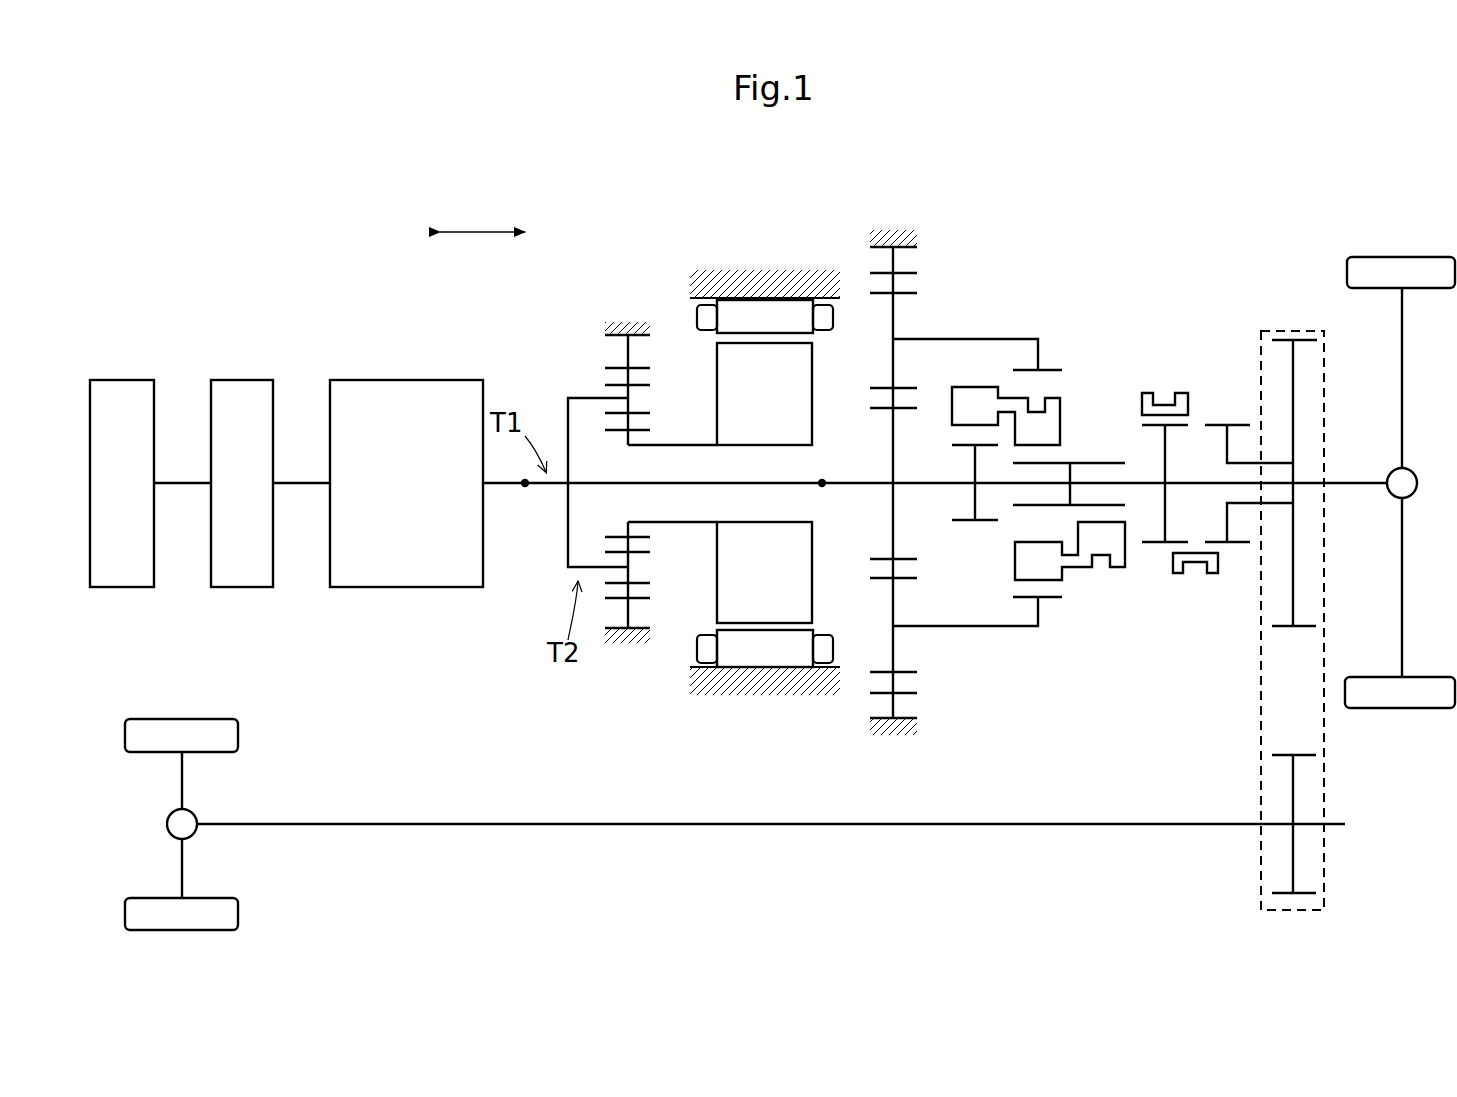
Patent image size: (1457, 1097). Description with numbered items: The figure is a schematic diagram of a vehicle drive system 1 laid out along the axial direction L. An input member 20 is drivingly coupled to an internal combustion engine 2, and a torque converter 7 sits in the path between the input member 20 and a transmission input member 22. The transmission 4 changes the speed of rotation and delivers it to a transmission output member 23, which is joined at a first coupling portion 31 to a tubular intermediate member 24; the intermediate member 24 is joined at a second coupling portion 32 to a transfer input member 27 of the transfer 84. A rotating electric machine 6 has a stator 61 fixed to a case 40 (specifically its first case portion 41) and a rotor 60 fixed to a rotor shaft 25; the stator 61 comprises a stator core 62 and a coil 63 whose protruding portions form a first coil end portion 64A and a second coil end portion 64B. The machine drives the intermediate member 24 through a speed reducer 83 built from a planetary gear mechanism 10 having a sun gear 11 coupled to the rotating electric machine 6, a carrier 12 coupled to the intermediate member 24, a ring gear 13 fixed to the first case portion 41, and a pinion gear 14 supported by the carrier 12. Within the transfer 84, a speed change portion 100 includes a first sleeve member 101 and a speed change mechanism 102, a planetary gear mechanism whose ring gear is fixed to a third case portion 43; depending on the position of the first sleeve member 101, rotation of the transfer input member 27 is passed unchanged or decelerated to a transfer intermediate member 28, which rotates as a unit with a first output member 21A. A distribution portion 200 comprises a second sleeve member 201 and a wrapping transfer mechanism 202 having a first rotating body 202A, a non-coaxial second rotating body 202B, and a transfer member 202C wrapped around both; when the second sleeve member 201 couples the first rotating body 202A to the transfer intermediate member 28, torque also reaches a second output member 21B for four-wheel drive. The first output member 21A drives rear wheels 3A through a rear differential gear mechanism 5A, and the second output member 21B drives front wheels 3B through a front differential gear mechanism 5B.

The vehicle drive system 1 is at (656, 187).
The internal combustion engine 2 is at (118, 378).
The torque converter 7 is at (246, 380).
The transmission 4 is at (405, 380).
The input member 20 is at (180, 488).
The transmission input member 22 is at (300, 488).
The transmission output member 23 is at (500, 488).
The intermediate member 24 is at (672, 485).
The transfer intermediate member 28 is at (1148, 482).
The first coupling portion 31 is at (526, 490).
The second coupling portion 32 is at (823, 490).
The carrier 12 is at (567, 406).
The ring gear 13 is at (608, 368).
The pinion gear 14 is at (640, 414).
The sun gear 11 is at (622, 435).
The planetary gear mechanism 10 is at (639, 390).
The speed reducer 83 is at (639, 390).
The rotor shaft 25 is at (683, 449).
The rotating electric machine 6 is at (743, 443).
The rotor 60 is at (808, 405).
The stator core 62 is at (770, 300).
The stator 61 is at (694, 306).
The coil 63 is at (775, 427).
The first coil end portion 64A is at (832, 318).
The second coil end portion 64B is at (702, 303).
The case 40 is at (780, 514).
The first case portion 41 is at (612, 640).
The third case portion 43 is at (893, 735).
The speed change mechanism 102 is at (926, 312).
The transfer 84 is at (1187, 172).
The speed change portion 100 is at (1027, 430).
The first sleeve member 101 is at (1085, 630).
The transfer input member 27 is at (925, 500).
The distribution portion 200 is at (1262, 542).
The second sleeve member 201 is at (1210, 635).
The wrapping transfer mechanism 202 is at (1266, 571).
The first rotating body 202A is at (1300, 338).
The second rotating body 202B is at (1283, 760).
The transfer member 202C is at (1326, 405).
The rear differential gear mechanism 5A is at (1418, 483).
The first output member 21A is at (1358, 488).
The rear wheels 3A is at (1402, 257).
The second output member 21B is at (1085, 832).
The front differential gear mechanism 5B is at (196, 814).
The front wheels 3B is at (238, 737).
The axial direction L is at (481, 223).